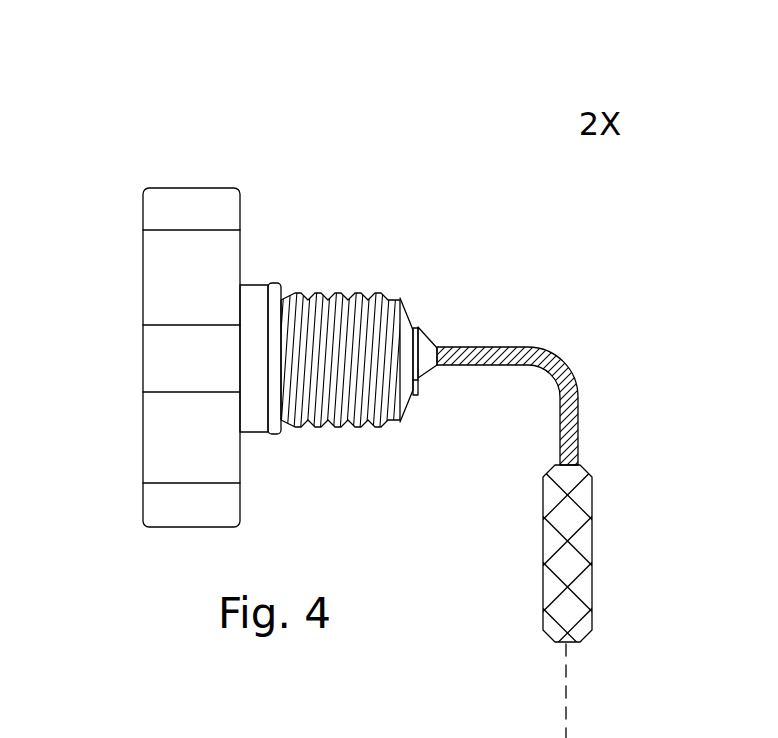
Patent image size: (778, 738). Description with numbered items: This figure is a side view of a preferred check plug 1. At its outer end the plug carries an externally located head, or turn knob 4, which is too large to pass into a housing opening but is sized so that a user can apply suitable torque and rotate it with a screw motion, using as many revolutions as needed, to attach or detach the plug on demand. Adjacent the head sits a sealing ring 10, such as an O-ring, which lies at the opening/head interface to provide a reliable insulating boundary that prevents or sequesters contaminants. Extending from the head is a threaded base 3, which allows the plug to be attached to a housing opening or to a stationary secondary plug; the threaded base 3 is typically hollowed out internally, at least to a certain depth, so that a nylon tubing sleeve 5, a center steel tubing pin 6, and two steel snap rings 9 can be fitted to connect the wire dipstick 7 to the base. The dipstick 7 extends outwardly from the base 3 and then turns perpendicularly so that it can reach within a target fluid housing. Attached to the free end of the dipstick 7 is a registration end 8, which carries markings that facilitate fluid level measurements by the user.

The check plug 1 is at (367, 369).
The threaded base 3 is at (453, 216).
The head (turn knob) 4 is at (253, 263).
The nylon tubing sleeve 5 is at (378, 420).
The center steel tubing pin 6 is at (525, 299).
The wire dipstick 7 is at (509, 390).
The registration end 8 is at (617, 575).
The steel snap rings 9 is at (522, 266).
The sealing ring 10 is at (380, 217).